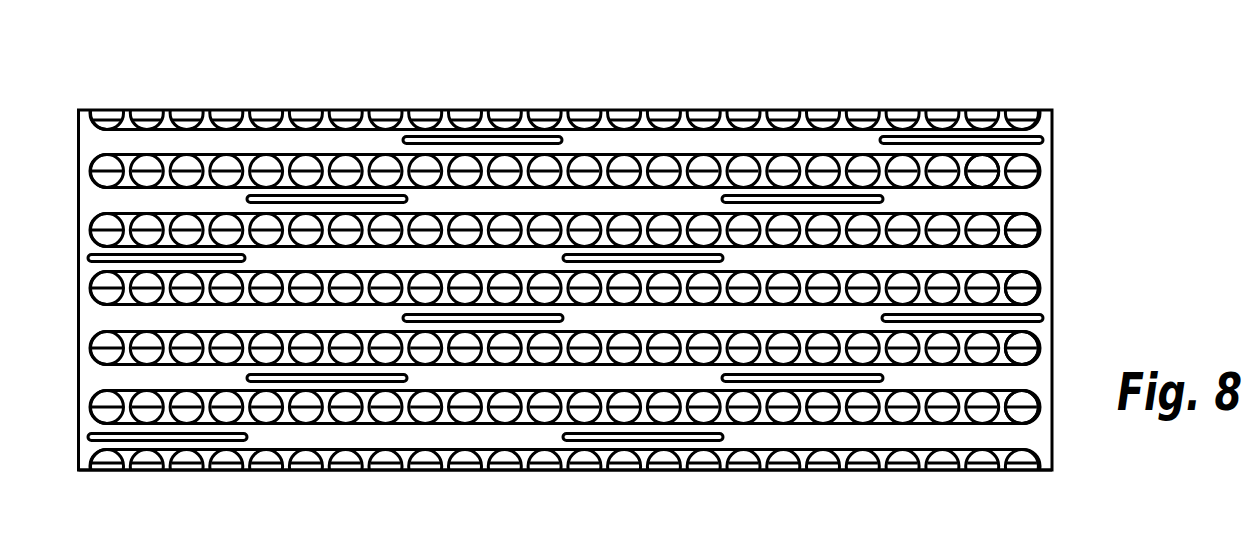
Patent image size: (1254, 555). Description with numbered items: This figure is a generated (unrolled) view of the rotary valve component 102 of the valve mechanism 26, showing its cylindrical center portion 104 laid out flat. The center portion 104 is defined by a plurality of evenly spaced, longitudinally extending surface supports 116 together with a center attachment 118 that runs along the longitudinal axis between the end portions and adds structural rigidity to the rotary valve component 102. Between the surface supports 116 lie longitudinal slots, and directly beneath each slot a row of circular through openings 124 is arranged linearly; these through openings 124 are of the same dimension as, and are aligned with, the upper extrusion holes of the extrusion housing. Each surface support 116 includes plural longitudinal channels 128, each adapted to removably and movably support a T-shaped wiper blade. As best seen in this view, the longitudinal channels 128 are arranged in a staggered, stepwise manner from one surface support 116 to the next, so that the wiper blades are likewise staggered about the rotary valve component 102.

The heat exchanger core 26 is at (1100, 125).
The rotary valve component 102 is at (1053, 175).
The cylindrical center portion 104 is at (218, 470).
The surface supports 116 is at (493, 262).
The center attachment 118 is at (973, 162).
The circular through openings 124 is at (783, 155).
The longitudinal channels 128 is at (190, 258).